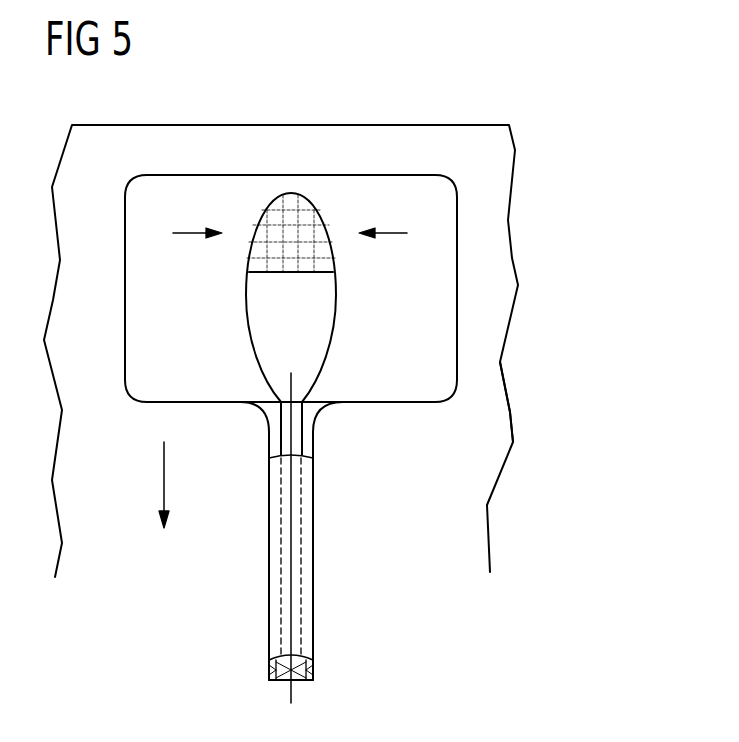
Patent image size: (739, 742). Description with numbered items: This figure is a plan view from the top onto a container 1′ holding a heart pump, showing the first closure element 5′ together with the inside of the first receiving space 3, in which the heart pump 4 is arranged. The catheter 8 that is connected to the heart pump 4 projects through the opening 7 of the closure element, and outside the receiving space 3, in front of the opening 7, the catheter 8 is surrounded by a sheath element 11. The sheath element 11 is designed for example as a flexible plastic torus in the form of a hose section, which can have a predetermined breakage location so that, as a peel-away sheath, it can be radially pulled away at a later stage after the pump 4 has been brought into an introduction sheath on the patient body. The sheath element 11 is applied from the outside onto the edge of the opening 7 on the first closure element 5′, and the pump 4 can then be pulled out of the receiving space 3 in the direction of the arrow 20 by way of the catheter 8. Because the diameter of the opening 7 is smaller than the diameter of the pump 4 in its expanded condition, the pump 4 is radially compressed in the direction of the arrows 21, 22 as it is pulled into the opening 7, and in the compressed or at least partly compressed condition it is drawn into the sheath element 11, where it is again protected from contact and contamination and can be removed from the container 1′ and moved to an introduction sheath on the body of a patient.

The container 1′ is at (532, 173).
The first receiving space 3 is at (457, 312).
The heart pump 4 is at (334, 330).
The first closure element 5′ is at (510, 412).
The opening 7 is at (314, 425).
The catheter 8 is at (314, 672).
The sheath element 11 is at (314, 582).
The arrow 20 is at (160, 482).
The arrow 21 is at (395, 235).
The arrow 22 is at (185, 235).